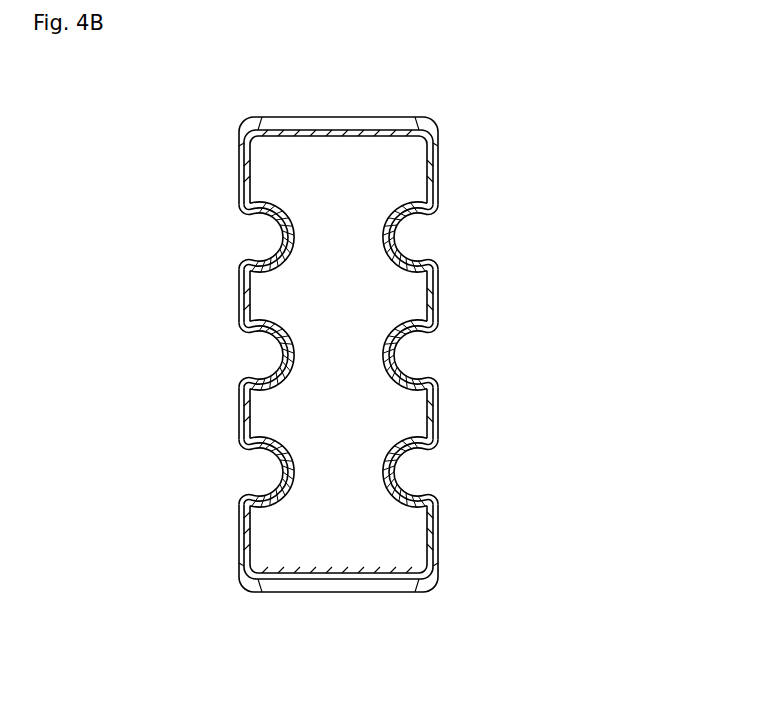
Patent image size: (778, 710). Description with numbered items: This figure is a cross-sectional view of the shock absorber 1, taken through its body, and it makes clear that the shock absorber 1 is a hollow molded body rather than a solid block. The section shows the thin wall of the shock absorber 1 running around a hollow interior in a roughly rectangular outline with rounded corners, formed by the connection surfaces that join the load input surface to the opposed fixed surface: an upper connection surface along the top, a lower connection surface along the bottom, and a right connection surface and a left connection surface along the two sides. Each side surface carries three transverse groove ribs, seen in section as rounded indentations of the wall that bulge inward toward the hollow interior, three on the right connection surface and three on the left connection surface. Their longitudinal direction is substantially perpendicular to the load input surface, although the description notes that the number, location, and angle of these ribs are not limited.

The shock absorber 1 is at (498, 108).